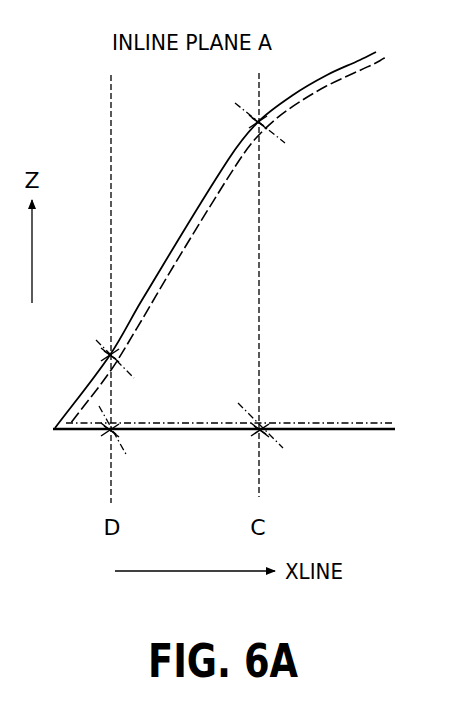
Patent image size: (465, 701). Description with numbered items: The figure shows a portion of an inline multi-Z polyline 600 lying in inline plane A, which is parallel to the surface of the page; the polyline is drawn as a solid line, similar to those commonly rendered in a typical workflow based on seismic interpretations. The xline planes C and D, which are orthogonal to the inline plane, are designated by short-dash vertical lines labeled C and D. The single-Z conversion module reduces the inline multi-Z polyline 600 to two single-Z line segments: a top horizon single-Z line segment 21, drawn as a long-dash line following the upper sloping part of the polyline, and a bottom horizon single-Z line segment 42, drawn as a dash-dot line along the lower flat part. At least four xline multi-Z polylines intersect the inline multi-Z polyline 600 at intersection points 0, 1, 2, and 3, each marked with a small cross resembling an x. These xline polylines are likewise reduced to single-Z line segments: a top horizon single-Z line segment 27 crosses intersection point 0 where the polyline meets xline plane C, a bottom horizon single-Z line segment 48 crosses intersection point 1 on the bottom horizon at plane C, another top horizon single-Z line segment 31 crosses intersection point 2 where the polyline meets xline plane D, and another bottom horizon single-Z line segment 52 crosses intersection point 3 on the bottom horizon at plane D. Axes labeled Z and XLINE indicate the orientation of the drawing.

The top horizon single-Z line segment 21 is at (307, 100).
The top horizon single-Z line segment 27 is at (247, 110).
The top horizon single-Z line segment 31 is at (98, 336).
The bottom horizon single-Z line segment 42 is at (167, 421).
The bottom horizon single-Z line segment 48 is at (247, 413).
The bottom horizon single-Z line segment 52 is at (123, 452).
The inline multi-Z polyline 600 is at (365, 433).
The intersection point 0 is at (244, 128).
The intersection point 1 is at (267, 415).
The intersection point 2 is at (98, 363).
The intersection point 3 is at (99, 443).